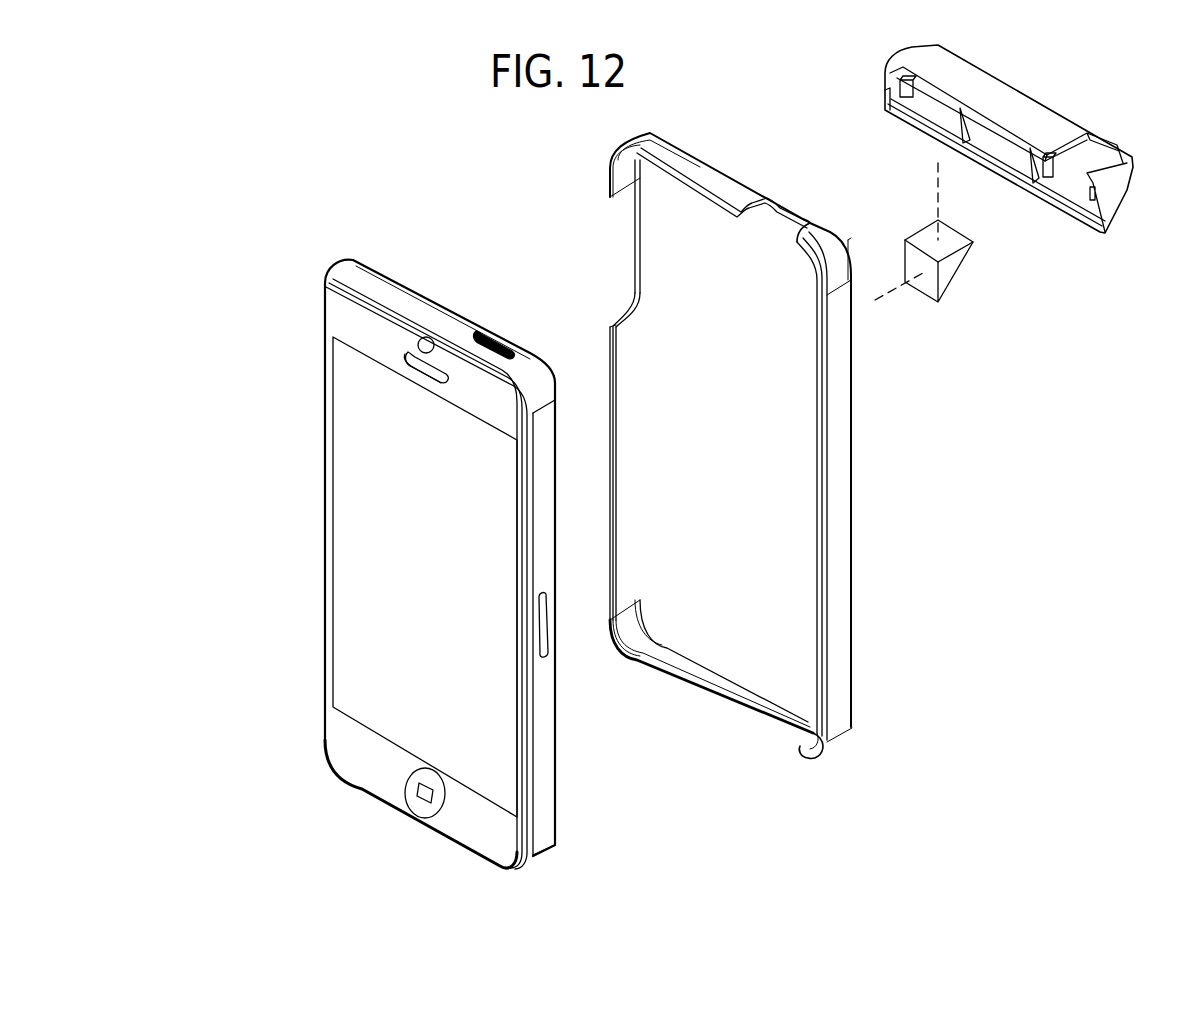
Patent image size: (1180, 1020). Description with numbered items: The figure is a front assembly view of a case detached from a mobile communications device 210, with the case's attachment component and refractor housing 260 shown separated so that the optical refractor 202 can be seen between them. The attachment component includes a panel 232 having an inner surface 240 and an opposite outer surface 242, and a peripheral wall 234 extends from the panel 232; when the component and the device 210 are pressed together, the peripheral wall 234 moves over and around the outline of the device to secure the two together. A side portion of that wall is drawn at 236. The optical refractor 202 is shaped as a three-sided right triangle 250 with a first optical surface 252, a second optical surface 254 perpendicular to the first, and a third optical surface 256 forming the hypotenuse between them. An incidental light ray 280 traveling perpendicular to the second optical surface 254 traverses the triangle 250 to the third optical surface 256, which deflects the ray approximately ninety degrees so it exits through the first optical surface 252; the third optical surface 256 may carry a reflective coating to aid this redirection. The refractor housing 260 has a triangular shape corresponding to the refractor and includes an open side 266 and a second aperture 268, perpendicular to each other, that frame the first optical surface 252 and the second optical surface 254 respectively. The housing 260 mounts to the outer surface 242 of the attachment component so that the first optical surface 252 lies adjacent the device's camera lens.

The optical refractor 202 is at (893, 290).
The mobile communications device 210 is at (356, 489).
The panel 232 is at (783, 723).
The peripheral wall 234 is at (686, 162).
The side wall 236 is at (622, 331).
The inner surface 240 is at (743, 607).
The outer surface 242 is at (853, 397).
The three-sided right triangle 250 is at (972, 243).
The first optical surface 252 is at (930, 283).
The second optical surface 254 is at (927, 228).
The third optical surface 256 is at (963, 267).
The refractor housing 260 is at (1010, 95).
The open side 266 is at (1075, 190).
The second aperture 268 is at (1093, 133).
The incidental light ray 280 is at (903, 242).